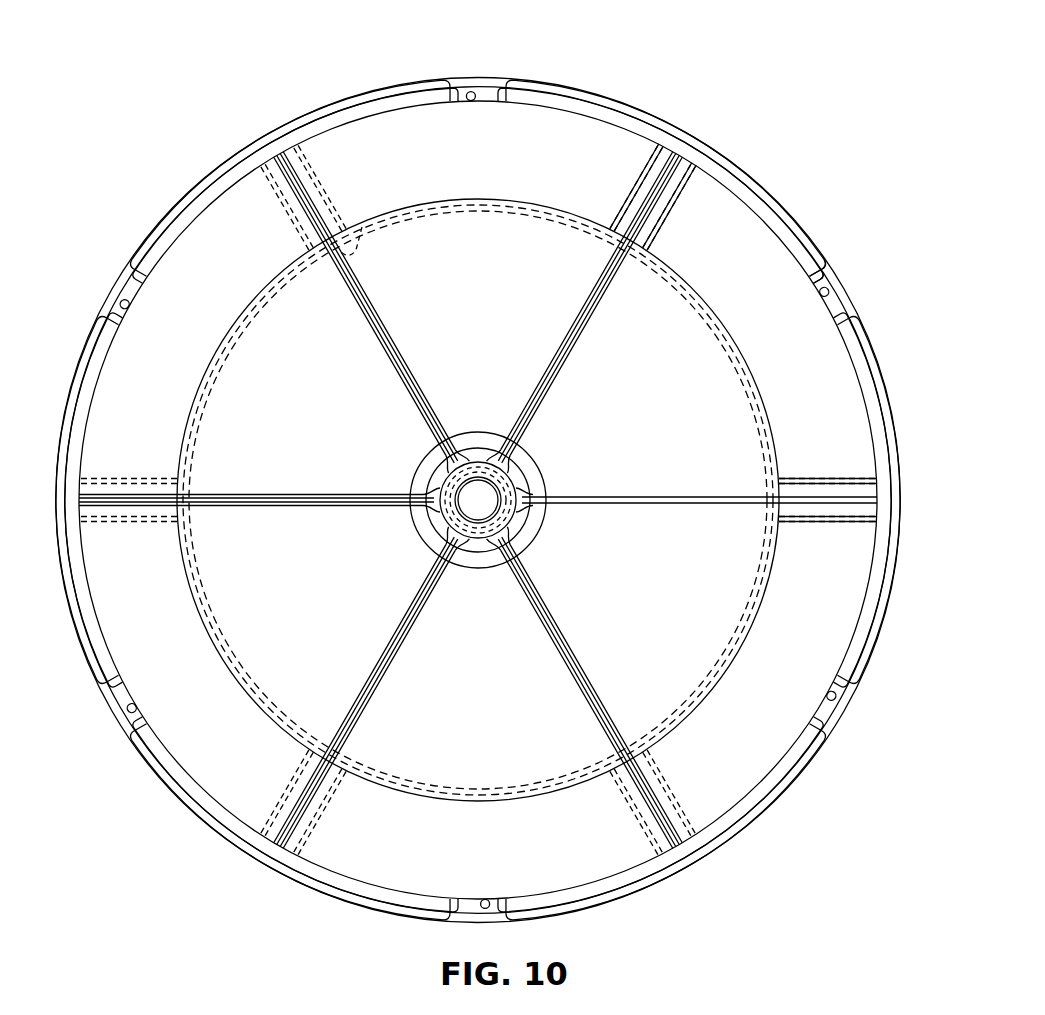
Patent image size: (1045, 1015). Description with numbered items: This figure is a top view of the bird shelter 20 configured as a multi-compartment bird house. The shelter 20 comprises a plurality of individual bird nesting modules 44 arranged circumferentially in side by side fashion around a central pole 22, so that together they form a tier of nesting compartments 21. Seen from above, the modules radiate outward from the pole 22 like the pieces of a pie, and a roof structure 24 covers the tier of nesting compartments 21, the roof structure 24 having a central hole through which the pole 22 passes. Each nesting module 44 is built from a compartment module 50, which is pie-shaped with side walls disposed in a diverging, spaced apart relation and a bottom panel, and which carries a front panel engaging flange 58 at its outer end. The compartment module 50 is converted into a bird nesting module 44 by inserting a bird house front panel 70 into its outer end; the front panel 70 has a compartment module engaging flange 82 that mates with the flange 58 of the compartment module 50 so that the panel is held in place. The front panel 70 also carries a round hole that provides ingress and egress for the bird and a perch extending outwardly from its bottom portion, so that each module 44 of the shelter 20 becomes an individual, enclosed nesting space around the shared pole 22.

The shelter 20 is at (522, 506).
The tier of nesting compartments 21 is at (773, 196).
The pole 22 is at (482, 480).
The roof structure 24 is at (688, 160).
The bird nesting module 44 is at (650, 108).
The compartment module 50 is at (524, 194).
The front panel engaging flange 58 is at (292, 195).
The bird house front panel 70 is at (395, 89).
The compartment module engaging flange 82 is at (362, 227).